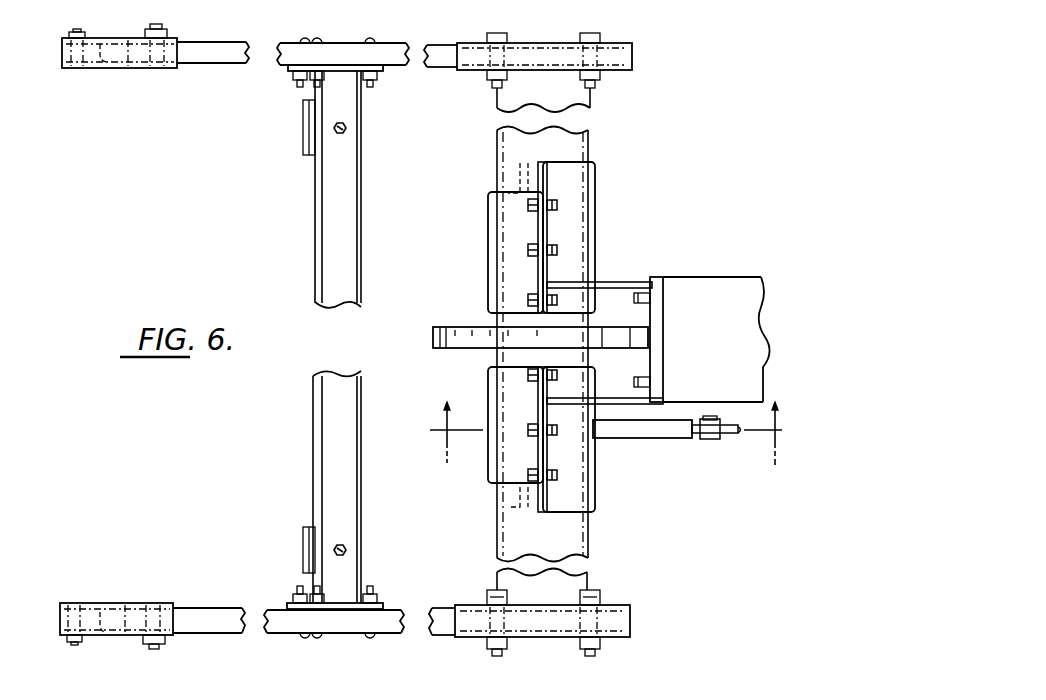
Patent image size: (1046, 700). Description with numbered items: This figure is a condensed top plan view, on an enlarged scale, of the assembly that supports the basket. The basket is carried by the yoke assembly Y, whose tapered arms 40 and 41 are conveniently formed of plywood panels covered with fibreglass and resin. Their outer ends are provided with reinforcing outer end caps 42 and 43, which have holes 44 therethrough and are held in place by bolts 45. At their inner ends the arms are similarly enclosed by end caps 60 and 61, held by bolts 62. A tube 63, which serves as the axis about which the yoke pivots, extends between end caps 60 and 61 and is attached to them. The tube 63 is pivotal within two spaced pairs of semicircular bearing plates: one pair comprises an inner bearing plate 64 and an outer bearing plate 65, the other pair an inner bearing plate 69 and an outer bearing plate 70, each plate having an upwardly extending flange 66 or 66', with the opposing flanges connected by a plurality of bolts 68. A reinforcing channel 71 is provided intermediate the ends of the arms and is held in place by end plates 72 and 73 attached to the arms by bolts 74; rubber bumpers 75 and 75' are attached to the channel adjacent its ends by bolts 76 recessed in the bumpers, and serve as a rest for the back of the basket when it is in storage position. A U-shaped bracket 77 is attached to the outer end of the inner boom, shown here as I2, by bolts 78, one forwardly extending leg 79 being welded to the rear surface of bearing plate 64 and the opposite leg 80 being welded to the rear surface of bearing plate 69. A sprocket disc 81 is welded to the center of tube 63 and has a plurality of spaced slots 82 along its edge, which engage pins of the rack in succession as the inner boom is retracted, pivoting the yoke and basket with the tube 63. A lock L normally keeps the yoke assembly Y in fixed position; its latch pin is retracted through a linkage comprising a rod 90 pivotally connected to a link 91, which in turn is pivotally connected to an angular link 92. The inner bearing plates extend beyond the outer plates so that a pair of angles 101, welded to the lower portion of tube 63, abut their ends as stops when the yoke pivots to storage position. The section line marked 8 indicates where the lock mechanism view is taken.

The tapered arm 40 is at (222, 63).
The tapered arm 41 is at (390, 633).
The outer end cap 42 is at (142, 68).
The outer end cap 43 is at (162, 608).
The holes 44 is at (108, 70).
The bolts 45 is at (70, 31).
The end cap 60 is at (630, 63).
The end cap 61 is at (554, 630).
The bolts 62 is at (501, 84).
The tube 63 is at (588, 142).
The inner bearing plate 64 is at (591, 200).
The outer bearing plate 65 is at (487, 234).
The upwardly extending flange 66 is at (567, 340).
The upwardly extending flange 66' is at (525, 337).
The bolts 68 is at (532, 207).
The inner bearing plate 69 is at (594, 497).
The outer bearing plate 70 is at (488, 478).
The reinforcing channel 71 is at (352, 258).
The end plate 72 is at (382, 68).
The end plate 73 is at (384, 607).
The bolts 74 is at (314, 85).
The rubber bumper 75 is at (282, 550).
The rubber bumper 75' is at (285, 127).
The bolts 76 is at (346, 130).
The U-shaped bracket 77 is at (654, 282).
The bolts 78 is at (650, 298).
The forwardly extending leg 79 is at (619, 272).
The leg 80 is at (632, 382).
The sprocket disc 81 is at (447, 330).
The slots 82 is at (596, 339).
The rod 90 is at (695, 434).
The link 91 is at (712, 440).
The angular link 92 is at (730, 432).
The angles 101 is at (506, 163).
The section line 8- 8 is at (606, 433).
The beam I2 is at (716, 327).
The lock L is at (648, 438).
The yoke assembly Y is at (200, 68).